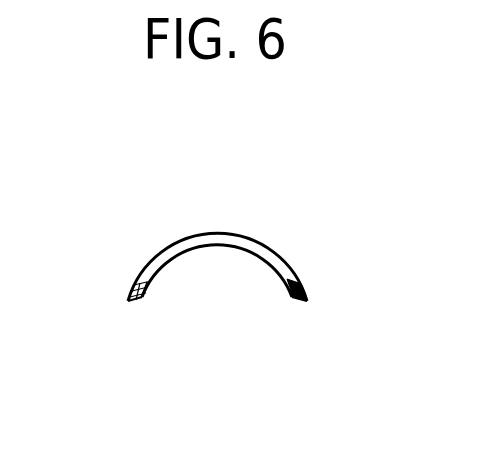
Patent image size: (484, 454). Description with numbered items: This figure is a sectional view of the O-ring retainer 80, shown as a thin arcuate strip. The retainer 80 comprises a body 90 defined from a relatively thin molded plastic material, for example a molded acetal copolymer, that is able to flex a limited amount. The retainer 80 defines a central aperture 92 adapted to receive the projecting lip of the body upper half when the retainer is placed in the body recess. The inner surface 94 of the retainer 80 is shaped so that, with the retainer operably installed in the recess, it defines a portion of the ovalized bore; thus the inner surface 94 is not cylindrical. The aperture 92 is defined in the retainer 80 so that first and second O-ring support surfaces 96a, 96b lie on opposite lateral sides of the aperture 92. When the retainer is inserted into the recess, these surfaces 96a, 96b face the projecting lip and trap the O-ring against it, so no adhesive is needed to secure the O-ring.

The O-ring retainer 80 is at (272, 220).
The body 90 is at (177, 253).
The central aperture 92 is at (162, 258).
The inner surface 94 is at (190, 252).
The first O-ring support surface 96a is at (140, 281).
The second O-ring support surface 96b is at (296, 276).